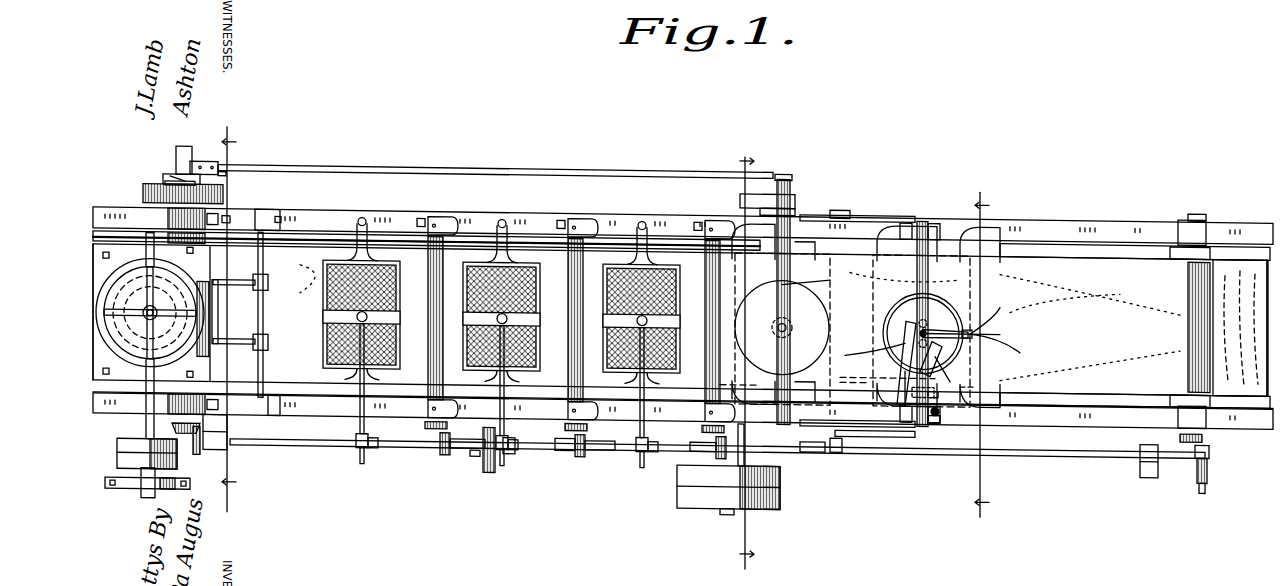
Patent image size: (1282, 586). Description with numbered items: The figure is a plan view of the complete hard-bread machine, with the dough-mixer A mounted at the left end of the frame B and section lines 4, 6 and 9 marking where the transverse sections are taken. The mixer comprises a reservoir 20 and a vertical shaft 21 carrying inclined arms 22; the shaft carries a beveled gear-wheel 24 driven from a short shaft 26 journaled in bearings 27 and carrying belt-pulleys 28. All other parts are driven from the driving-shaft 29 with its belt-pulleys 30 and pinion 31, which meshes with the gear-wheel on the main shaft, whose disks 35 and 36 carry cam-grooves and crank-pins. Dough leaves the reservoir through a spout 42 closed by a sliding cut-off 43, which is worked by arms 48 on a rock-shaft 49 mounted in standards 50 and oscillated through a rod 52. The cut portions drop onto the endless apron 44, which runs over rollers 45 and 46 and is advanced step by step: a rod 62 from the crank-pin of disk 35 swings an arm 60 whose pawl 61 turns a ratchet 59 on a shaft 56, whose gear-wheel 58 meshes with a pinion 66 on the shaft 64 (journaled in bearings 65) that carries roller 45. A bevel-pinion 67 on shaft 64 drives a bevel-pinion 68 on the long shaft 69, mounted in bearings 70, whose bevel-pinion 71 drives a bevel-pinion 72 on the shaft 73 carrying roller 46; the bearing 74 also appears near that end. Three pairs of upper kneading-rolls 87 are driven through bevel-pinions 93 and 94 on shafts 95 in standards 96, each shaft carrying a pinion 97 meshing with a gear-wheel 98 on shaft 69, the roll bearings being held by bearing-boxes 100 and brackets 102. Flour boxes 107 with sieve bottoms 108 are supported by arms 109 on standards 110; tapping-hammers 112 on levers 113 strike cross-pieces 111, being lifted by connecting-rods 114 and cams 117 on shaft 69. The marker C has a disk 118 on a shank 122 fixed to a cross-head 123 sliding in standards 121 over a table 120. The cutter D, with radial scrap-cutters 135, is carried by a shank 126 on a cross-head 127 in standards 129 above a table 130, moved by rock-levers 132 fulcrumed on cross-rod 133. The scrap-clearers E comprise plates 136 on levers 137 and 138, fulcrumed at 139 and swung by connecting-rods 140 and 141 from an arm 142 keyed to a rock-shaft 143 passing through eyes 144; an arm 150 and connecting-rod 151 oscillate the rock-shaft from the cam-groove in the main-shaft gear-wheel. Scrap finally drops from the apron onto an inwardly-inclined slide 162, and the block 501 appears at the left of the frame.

The section line 4 4 is at (217, 316).
The section line 6 6 is at (745, 351).
The section line 9 9 is at (982, 349).
The reservoir 20 is at (128, 368).
The vertical shaft 21 is at (150, 312).
The arms 22 is at (153, 312).
The beveled gear-wheel 24 is at (182, 272).
The short shaft 26 is at (118, 420).
The bearings 27 is at (141, 483).
The belt-pulleys 28 is at (117, 455).
The driving-shaft 29 is at (724, 506).
The belt-pulleys 30 is at (690, 475).
The pinion 31 is at (720, 386).
The disk 35 is at (767, 200).
The disk 36 is at (836, 442).
The spout 42 is at (205, 345).
The sliding gate or cut-off 43 is at (225, 278).
The endless apron 44 is at (295, 240).
The roller 45 is at (168, 237).
The roller 46 is at (1188, 255).
The arms 48 is at (245, 290).
The rock-shaft 49 is at (263, 300).
The standards 50 is at (274, 413).
The rod 52 is at (330, 237).
The shaft 56 is at (186, 145).
The gear-wheel 58 is at (163, 178).
The ratchet 59 is at (172, 173).
The arm 60 is at (195, 160).
The pawl 61 is at (226, 180).
The rod 62 is at (495, 164).
The shaft 64 is at (170, 180).
The bearings 65 is at (168, 217).
The pinion 66 is at (143, 194).
The bevel-pinion 67 is at (188, 414).
The bevel-pinion 68 is at (191, 450).
The shaft 69 is at (1075, 443).
The bearings 70 is at (227, 426).
The bevel-pinion 71 is at (1201, 478).
The bevel-pinion 72 is at (1212, 464).
The shaft 73 is at (1197, 199).
The roller bearing 74 is at (1180, 222).
The upper kneading-rolls 87 is at (428, 378).
The bevel-pinions 93 is at (425, 421).
The bevel-pinions 94 is at (446, 450).
The shaft 95 is at (563, 444).
The standards 96 is at (466, 443).
The pinion 97 is at (478, 451).
The gear-wheel 98 is at (490, 467).
The bearing-boxes 100 is at (440, 212).
The brackets 102 is at (585, 319).
The boxes 107 is at (505, 308).
The sieve bottoms 108 is at (388, 284).
The arms 109 is at (357, 250).
The standards 110 is at (366, 213).
The cross-pieces 111 is at (501, 318).
The tapping-hammers 112 is at (368, 313).
The levers 113 is at (358, 377).
The connecting-rods 114 is at (361, 460).
The cams 117 is at (520, 437).
The disk 118 is at (782, 327).
The table 120 is at (790, 230).
The standards 121 is at (792, 200).
The shank 122 is at (787, 314).
The cross-head 123 is at (821, 284).
The shank 126 is at (918, 312).
The cross-head 127 is at (928, 272).
The standards 129 is at (940, 220).
The table 130 is at (985, 230).
The rock-levers 132 is at (892, 205).
The cross-rod 133 is at (848, 204).
The radial scrap-cutters 135 is at (885, 325).
The plates 136 is at (1002, 329).
The lever 137 is at (954, 368).
The lever 138 is at (950, 316).
The fulcrums 139 is at (874, 355).
The connecting-rod 140 is at (949, 424).
The connecting-rod 141 is at (891, 385).
The arm 142 is at (912, 386).
The rock-shaft 143 is at (940, 400).
The eyes 144 is at (938, 385).
The arm 150 is at (980, 375).
The connecting-rod 151 is at (887, 388).
The inwardly-inclined slide 162 is at (1240, 328).
The bearing block 501 is at (270, 212).
The dough-mixer A is at (150, 312).
The frame B is at (804, 325).
The marker or perforator C is at (782, 329).
The cutter D is at (921, 331).
The scrap-clearers E is at (916, 364).